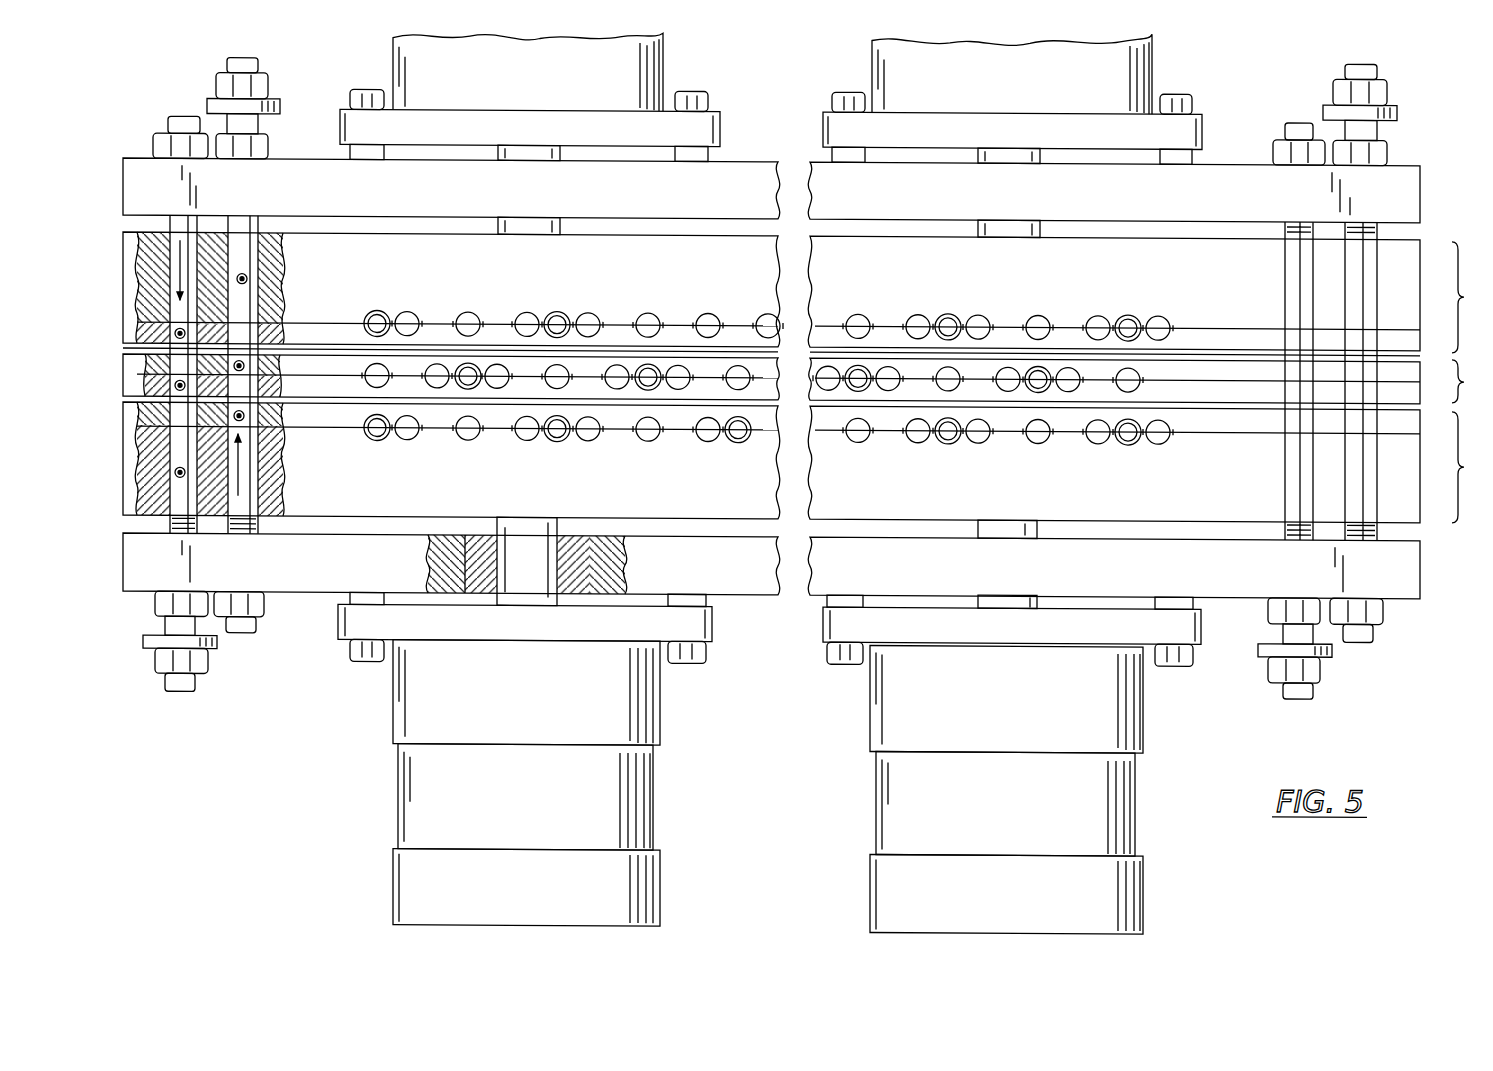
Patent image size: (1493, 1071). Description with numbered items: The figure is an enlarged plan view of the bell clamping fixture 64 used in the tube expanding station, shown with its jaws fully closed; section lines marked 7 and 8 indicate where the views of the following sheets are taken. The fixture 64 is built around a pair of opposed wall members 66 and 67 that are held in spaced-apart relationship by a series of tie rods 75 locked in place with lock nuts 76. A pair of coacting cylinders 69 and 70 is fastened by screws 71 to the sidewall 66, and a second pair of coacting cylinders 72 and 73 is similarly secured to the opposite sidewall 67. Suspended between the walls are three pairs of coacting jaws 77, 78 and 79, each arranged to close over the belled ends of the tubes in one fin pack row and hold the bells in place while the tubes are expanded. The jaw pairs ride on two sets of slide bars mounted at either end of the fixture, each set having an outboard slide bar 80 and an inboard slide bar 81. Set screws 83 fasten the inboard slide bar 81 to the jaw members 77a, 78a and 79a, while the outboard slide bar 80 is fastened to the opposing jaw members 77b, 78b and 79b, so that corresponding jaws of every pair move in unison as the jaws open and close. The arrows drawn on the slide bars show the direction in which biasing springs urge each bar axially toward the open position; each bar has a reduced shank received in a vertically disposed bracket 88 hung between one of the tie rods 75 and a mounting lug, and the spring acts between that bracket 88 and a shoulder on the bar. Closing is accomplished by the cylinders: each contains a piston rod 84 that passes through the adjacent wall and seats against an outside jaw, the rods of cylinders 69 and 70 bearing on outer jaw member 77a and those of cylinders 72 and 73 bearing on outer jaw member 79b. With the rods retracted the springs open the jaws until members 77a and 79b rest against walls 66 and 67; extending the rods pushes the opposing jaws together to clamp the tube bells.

The tube clamping fixture 64 is at (210, 418).
The wall member 66 is at (1422, 190).
The wall member 67 is at (1420, 570).
The coacting cylinder 69 is at (665, 55).
The coacting cylinder 70 is at (1155, 65).
The screw 71 is at (712, 99).
The coacting cylinder 72 is at (655, 821).
The coacting cylinder 73 is at (1135, 826).
The tie rod 75 is at (1362, 290).
The lock nut 76 is at (1390, 142).
The coacting jaw pair 77 is at (807, 294).
The outer jaw member 77a is at (1024, 305).
The jaw member 77b is at (330, 331).
The coacting jaw pair 78 is at (807, 378).
The jaw member 78a is at (862, 360).
The jaw member 78b is at (907, 387).
The coacting jaw pair 79 is at (807, 462).
The jaw member 79a is at (1012, 423).
The outer jaw member 79b is at (457, 449).
The outboard slide bar 80 is at (175, 484).
The inboard slide bar 81 is at (245, 502).
The set screw 83 is at (247, 278).
The piston rod 84 is at (530, 228).
The bracket 88 is at (283, 103).
The section line 7- 7 is at (847, 224).
The section line 8- 8 is at (182, 90).